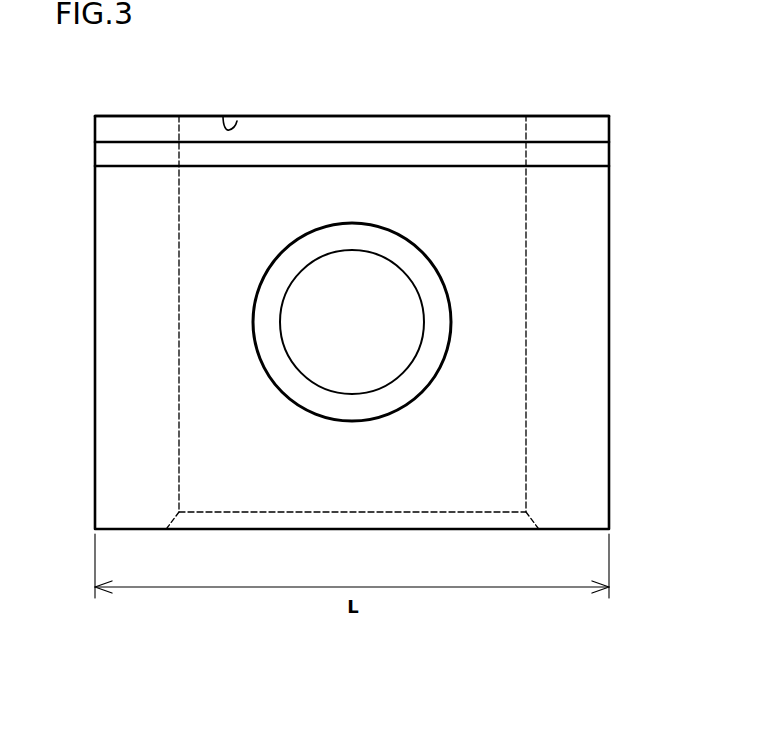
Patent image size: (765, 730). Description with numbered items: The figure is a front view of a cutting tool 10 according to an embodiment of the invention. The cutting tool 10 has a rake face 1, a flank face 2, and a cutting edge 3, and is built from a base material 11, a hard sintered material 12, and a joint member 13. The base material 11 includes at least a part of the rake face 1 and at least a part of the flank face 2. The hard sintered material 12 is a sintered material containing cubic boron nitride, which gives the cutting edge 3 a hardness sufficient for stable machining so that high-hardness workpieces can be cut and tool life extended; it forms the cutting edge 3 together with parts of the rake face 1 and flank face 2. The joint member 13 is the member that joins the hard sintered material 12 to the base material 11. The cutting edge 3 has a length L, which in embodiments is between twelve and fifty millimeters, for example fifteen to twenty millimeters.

The cutting tool 10 is at (584, 77).
The base material 11 is at (596, 323).
The hard sintered material 12 is at (597, 128).
The joint member 13 is at (597, 153).
The flank face 2 is at (413, 116).
The cutting edge 3 is at (223, 116).
The rake face 1 is at (490, 435).